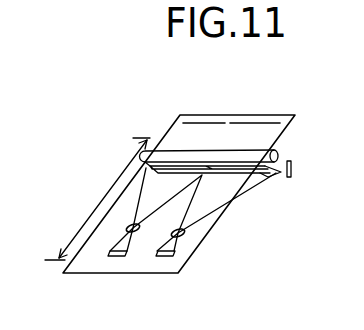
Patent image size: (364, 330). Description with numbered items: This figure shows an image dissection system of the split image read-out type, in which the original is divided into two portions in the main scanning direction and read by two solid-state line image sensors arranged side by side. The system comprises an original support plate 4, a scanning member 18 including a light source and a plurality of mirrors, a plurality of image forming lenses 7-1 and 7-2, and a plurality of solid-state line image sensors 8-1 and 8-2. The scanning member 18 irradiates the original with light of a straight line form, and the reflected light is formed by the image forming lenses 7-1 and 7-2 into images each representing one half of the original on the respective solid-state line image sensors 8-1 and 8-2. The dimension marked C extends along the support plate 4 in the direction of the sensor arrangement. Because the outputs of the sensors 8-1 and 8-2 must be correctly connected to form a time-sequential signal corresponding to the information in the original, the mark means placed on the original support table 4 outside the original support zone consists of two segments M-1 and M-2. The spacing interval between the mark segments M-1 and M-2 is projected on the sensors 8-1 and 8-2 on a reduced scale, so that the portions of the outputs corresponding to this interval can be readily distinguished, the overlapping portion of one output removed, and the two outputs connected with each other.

The original support plate 4 is at (285, 130).
The scanning member 18 is at (291, 170).
The first mark segment M-1 is at (194, 117).
The second mark segment M-2 is at (261, 117).
The first image forming lens 7-1 is at (127, 228).
The second image forming lens 7-2 is at (186, 234).
The first solid-state line image sensor 8-1 is at (110, 257).
The second solid-state line image sensor 8-2 is at (158, 257).
The scanning width C is at (97, 199).